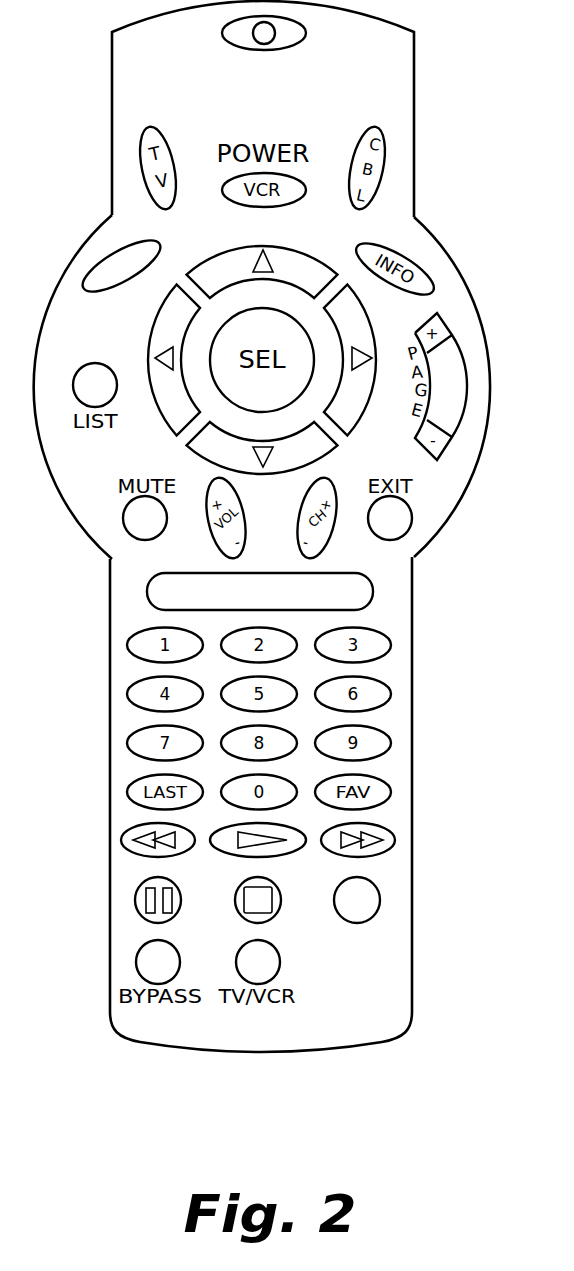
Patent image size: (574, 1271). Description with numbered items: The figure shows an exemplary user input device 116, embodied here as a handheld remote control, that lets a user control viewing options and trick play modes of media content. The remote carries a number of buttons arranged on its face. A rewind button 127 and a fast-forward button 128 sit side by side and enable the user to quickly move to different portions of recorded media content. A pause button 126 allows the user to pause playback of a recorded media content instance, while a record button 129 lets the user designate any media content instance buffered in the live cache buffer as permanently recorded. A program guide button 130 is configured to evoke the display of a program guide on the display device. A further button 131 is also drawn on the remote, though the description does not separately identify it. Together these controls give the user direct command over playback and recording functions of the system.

The user input device 116 is at (452, 63).
The pause button 126 is at (134, 900).
The rewind button 127 is at (121, 840).
The fast-forward button 128 is at (395, 840).
The record button 129 is at (381, 900).
The program guide button 130 is at (373, 592).
The categories button 131 is at (72, 778).